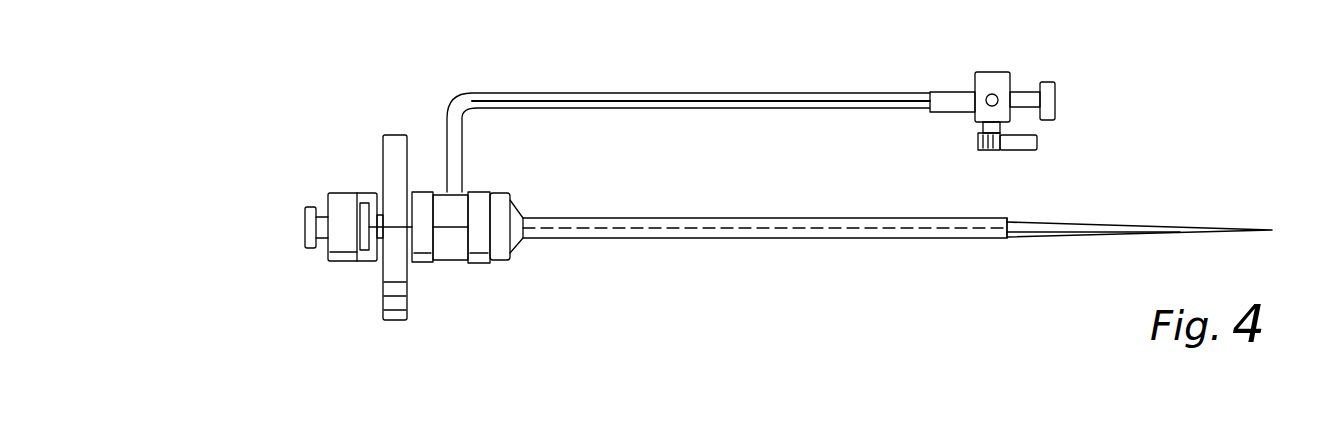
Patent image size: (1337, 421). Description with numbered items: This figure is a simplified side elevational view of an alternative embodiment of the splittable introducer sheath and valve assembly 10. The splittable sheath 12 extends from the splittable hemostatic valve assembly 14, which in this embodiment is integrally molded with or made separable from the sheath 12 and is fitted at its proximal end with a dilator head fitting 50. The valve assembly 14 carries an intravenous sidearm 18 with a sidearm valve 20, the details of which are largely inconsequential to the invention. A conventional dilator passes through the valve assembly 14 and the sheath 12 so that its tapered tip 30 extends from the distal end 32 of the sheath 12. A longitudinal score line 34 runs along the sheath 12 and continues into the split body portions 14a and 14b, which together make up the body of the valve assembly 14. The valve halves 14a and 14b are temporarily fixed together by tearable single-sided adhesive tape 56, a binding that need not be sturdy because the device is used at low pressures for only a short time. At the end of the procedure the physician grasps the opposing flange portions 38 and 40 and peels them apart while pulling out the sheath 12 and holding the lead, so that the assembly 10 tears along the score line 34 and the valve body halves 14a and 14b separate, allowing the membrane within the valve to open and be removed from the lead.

The splittable introducer sheath and valve assembly 10 is at (813, 297).
The splittable sheath 12 is at (957, 245).
The splittable hemostatic valve assembly 14 is at (520, 177).
The split body portion 14a is at (507, 258).
The split body portion 14b is at (503, 215).
The intravenous sidearm 18 is at (462, 180).
The sidearm valve 20 is at (965, 120).
The tapered tip 30 is at (1215, 225).
The distal end 32 is at (1010, 220).
The score line 34 is at (393, 222).
The flange portion 38 is at (381, 305).
The flange portion 40 is at (383, 152).
The dilator head fitting 50 is at (333, 195).
The tearable single-sided adhesive tape 56 is at (480, 265).